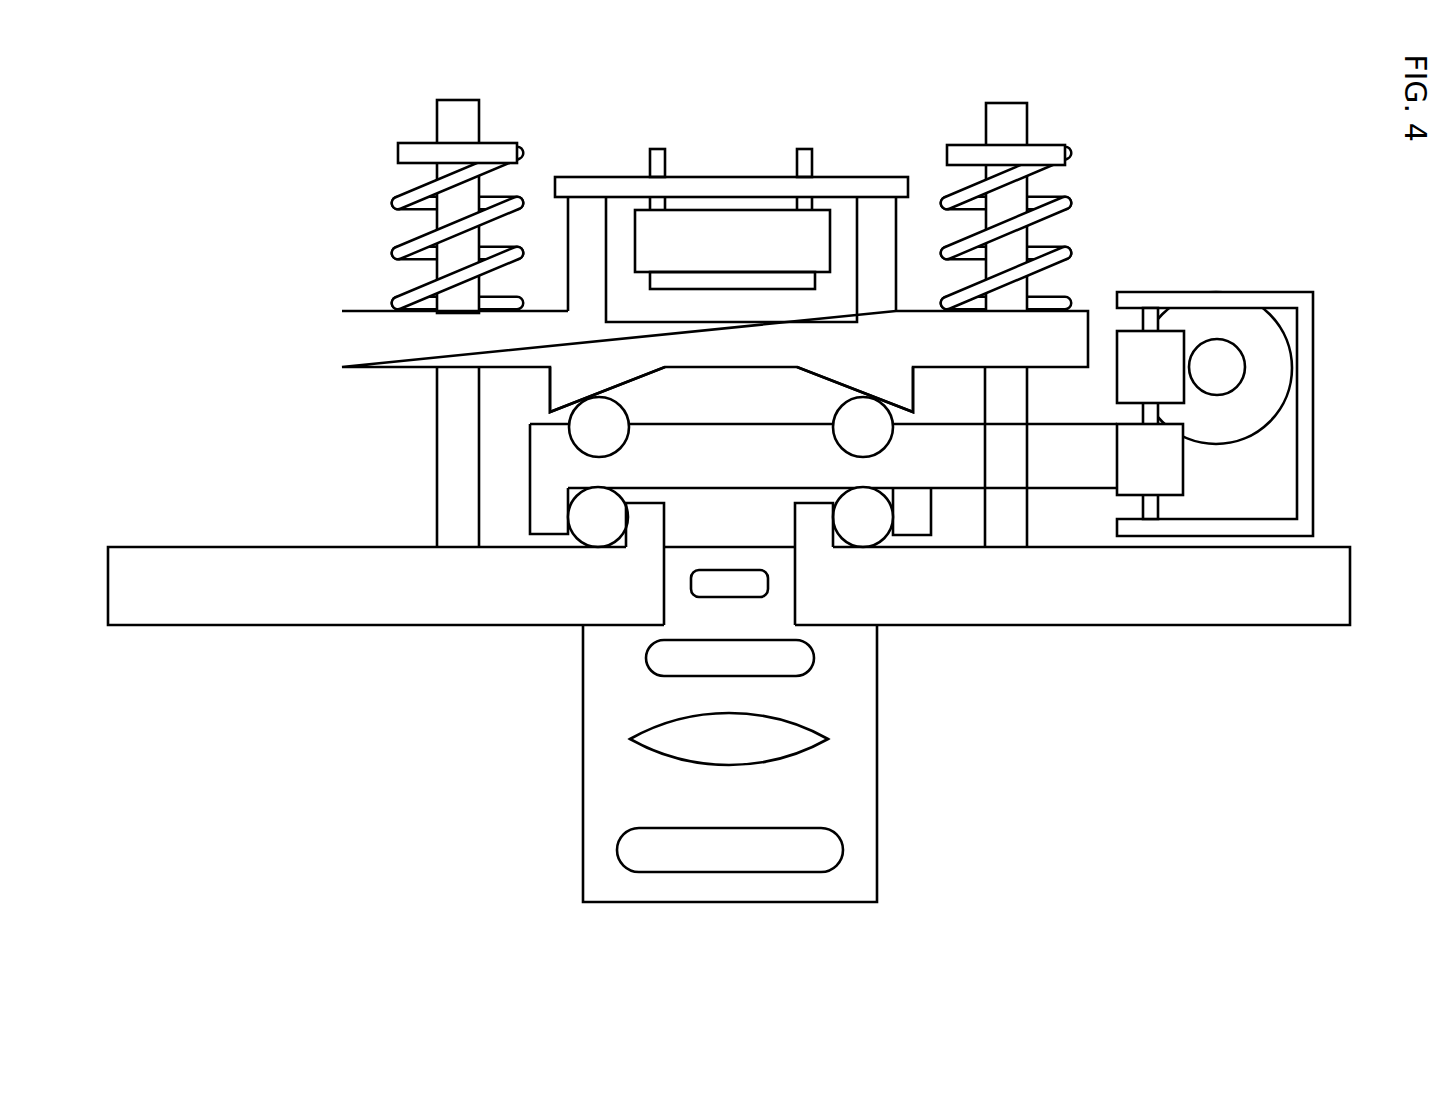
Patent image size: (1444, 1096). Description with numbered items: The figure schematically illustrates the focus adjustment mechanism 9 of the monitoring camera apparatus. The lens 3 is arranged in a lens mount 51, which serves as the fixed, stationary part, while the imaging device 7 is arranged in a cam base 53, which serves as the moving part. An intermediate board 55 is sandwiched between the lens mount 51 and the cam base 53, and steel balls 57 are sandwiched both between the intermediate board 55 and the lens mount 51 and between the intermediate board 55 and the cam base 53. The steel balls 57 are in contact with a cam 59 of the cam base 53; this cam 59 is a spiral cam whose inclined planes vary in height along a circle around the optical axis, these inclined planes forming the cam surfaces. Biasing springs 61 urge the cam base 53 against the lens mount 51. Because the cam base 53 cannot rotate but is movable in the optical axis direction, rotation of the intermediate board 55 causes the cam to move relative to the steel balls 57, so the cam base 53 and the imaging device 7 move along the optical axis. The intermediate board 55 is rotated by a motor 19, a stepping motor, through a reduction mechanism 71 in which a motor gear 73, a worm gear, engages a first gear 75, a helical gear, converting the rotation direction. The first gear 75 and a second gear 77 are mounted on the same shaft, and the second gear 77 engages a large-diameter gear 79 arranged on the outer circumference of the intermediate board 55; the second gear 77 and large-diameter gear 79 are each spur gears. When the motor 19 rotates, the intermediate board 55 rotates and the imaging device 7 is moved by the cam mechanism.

The lens 3 is at (553, 807).
The imaging device 7 is at (732, 230).
The focus adjustment mechanism 9 is at (1185, 736).
The motor 19 is at (1267, 335).
The lens mount 51 is at (228, 612).
The cam base 53 is at (355, 336).
The intermediate board 55 is at (548, 461).
The steel balls 57 is at (583, 424).
The cam 59 is at (563, 385).
The biasing springs 61 is at (407, 196).
The reduction mechanism 71 is at (1219, 430).
The motor gear 73 is at (1227, 362).
The first gear 75 is at (1133, 352).
The second gear 77 is at (1168, 465).
The large-diameter gear 79 is at (1133, 478).